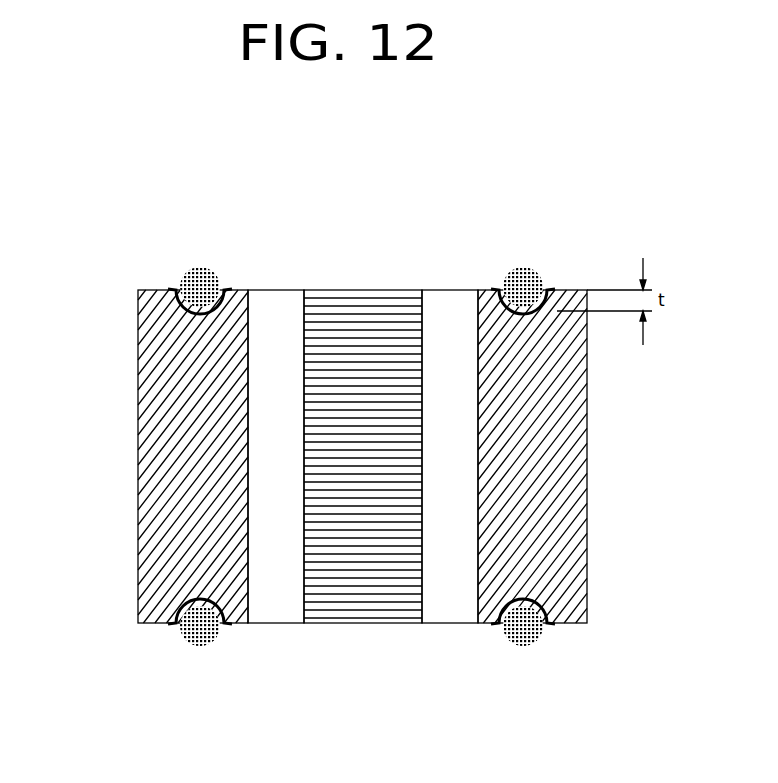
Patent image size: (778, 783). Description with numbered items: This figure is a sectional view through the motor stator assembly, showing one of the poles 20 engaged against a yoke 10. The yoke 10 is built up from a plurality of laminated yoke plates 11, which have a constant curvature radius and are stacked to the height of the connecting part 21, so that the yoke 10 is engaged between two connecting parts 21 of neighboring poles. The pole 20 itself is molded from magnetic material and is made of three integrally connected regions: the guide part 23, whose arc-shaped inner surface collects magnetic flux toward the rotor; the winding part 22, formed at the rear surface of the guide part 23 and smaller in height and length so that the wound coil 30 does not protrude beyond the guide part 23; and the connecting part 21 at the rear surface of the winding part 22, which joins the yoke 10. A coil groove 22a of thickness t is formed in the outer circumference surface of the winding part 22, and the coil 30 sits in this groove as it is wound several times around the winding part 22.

The yoke 10 is at (363, 453).
The yoke plate 11 is at (364, 607).
The pole 20 is at (136, 440).
The connecting part 21 is at (145, 285).
The winding part 22 is at (233, 292).
The coil groove 22a is at (548, 606).
The guide part 23 is at (279, 303).
The coil 30 is at (190, 270).